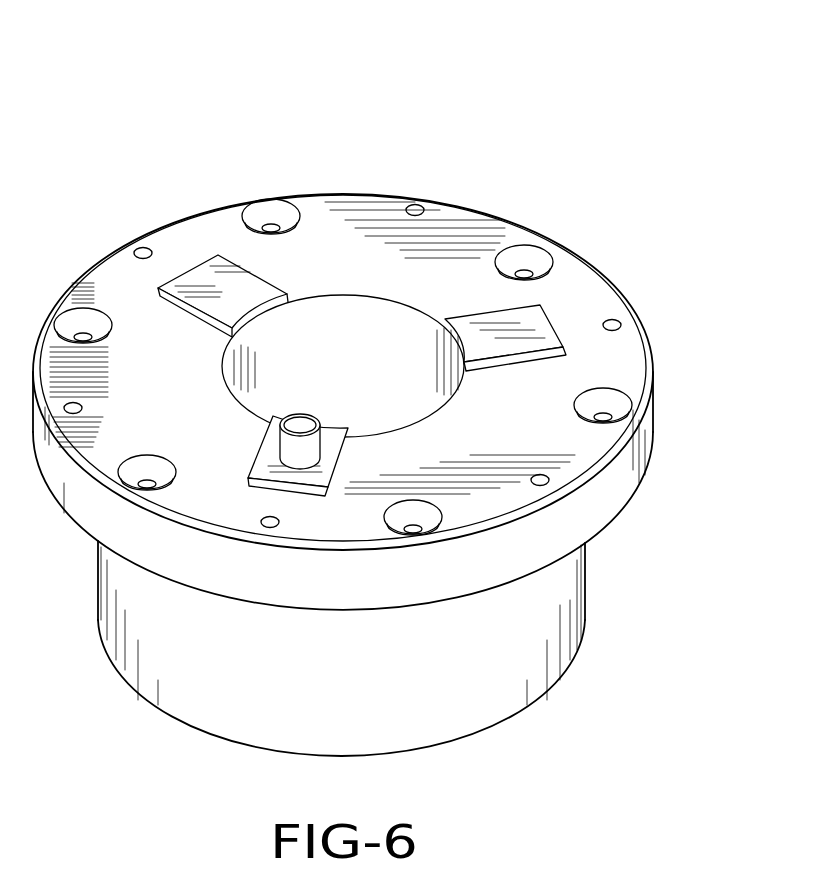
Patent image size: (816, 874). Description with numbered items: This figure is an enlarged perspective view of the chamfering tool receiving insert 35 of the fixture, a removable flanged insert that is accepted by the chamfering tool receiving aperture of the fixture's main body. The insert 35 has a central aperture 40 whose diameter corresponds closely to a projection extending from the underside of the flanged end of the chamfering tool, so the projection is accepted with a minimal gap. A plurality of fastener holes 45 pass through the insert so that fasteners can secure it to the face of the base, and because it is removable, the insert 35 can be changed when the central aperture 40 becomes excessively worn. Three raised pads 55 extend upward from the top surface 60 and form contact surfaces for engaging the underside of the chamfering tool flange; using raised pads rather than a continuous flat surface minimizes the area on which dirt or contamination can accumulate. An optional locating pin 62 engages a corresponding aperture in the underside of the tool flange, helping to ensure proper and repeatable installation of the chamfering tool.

The chamfering tool receiving insert 35 is at (47, 97).
The central aperture 40 is at (389, 315).
The fastener holes 45 is at (275, 207).
The raised pads 55 is at (203, 285).
The top surface 60 is at (464, 237).
The locating pin 62 is at (298, 450).